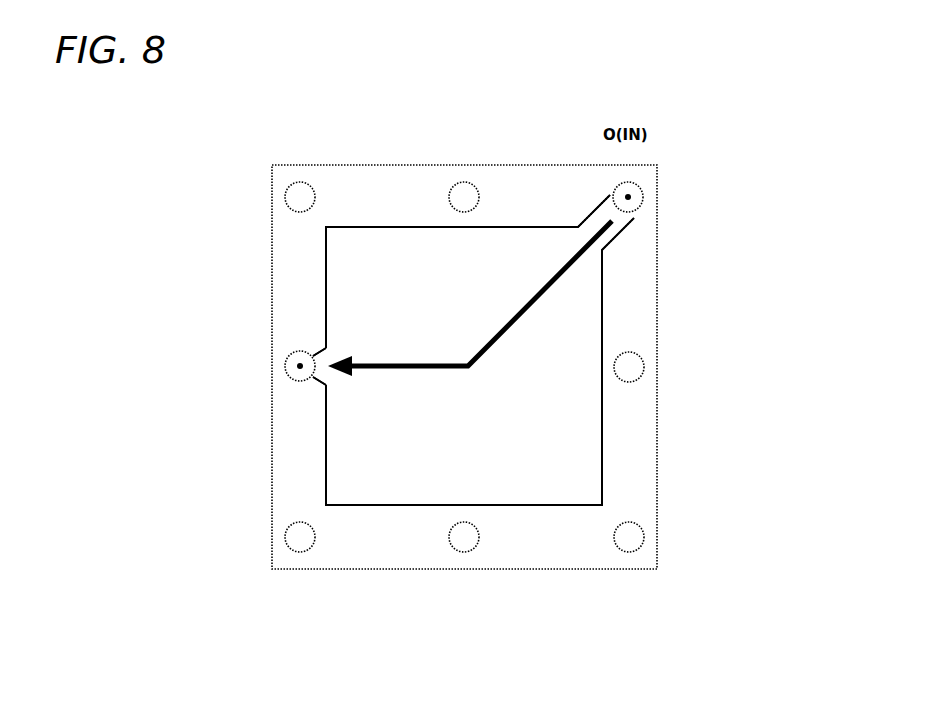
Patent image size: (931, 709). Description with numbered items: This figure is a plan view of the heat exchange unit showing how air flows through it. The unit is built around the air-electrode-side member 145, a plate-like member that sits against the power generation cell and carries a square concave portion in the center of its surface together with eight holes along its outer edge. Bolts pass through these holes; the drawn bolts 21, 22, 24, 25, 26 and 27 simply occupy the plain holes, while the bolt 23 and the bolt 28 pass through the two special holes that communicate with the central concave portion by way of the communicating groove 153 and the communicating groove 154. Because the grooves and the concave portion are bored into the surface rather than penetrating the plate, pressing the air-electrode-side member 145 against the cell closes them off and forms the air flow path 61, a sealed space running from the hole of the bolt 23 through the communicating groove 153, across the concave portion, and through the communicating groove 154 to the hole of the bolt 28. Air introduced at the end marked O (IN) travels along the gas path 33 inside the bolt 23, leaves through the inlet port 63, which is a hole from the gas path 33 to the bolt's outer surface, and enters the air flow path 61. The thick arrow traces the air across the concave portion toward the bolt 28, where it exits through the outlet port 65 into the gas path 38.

The air-electrode-side member 145 is at (657, 437).
The air flow path 61 is at (556, 330).
The positioning hole (151) 21 is at (305, 183).
The positioning hole (151) 22 is at (468, 183).
The bolt 23 is at (636, 187).
The positioning hole (151) 24 is at (645, 365).
The positioning hole (151) 25 is at (645, 535).
The positioning hole (151) 26 is at (466, 552).
The positioning hole (151) 27 is at (288, 534).
The bolt 28 is at (296, 352).
The gas path 33 is at (630, 197).
The gas path 38 is at (297, 364).
The inlet port 63 is at (620, 226).
The outlet port 65 is at (316, 374).
The communicating groove 153 is at (604, 219).
The communicating groove 154 is at (316, 350).